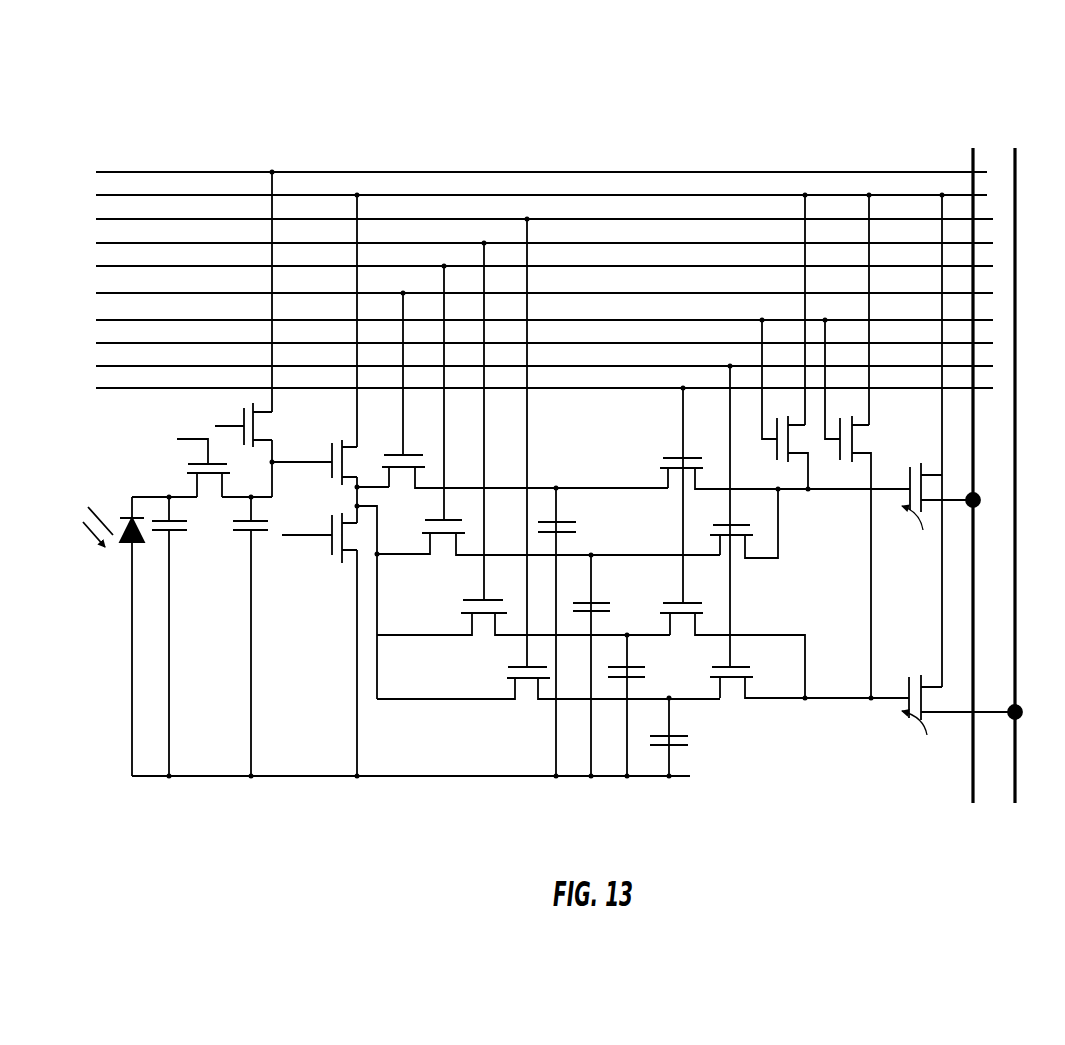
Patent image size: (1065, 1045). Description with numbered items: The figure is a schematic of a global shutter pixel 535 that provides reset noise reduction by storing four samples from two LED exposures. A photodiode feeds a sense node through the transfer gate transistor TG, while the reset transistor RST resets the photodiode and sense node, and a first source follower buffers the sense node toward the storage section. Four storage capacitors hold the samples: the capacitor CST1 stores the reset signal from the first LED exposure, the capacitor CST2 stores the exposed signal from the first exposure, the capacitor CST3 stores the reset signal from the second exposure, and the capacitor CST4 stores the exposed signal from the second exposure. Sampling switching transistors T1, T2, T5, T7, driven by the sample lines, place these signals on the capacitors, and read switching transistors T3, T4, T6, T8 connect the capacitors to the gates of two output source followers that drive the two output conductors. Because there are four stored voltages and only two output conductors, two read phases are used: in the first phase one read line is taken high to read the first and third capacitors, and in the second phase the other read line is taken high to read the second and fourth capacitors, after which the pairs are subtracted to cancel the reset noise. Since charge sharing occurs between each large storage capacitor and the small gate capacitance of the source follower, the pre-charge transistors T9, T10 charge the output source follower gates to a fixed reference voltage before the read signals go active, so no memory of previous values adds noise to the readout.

The global shutter pixel 535 is at (574, 433).
The transfer gate transistor TG is at (190, 461).
The reset transistor RST is at (240, 448).
The switching transistor T1 is at (525, 458).
The switching transistor T2 is at (548, 525).
The switching transistor T3 is at (785, 459).
The switching transistor T4 is at (744, 523).
The switching transistor T5 is at (523, 602).
The switching transistor T6 is at (732, 632).
The switching transistor T7 is at (548, 672).
The switching transistor T8 is at (809, 668).
The pre-charge transistor T9 is at (788, 439).
The pre-charge transistor T10 is at (851, 543).
The storage capacitor CST1 is at (567, 632).
The storage capacitor CST2 is at (604, 665).
The storage capacitor CST3 is at (636, 705).
The storage capacitor CST4 is at (681, 737).